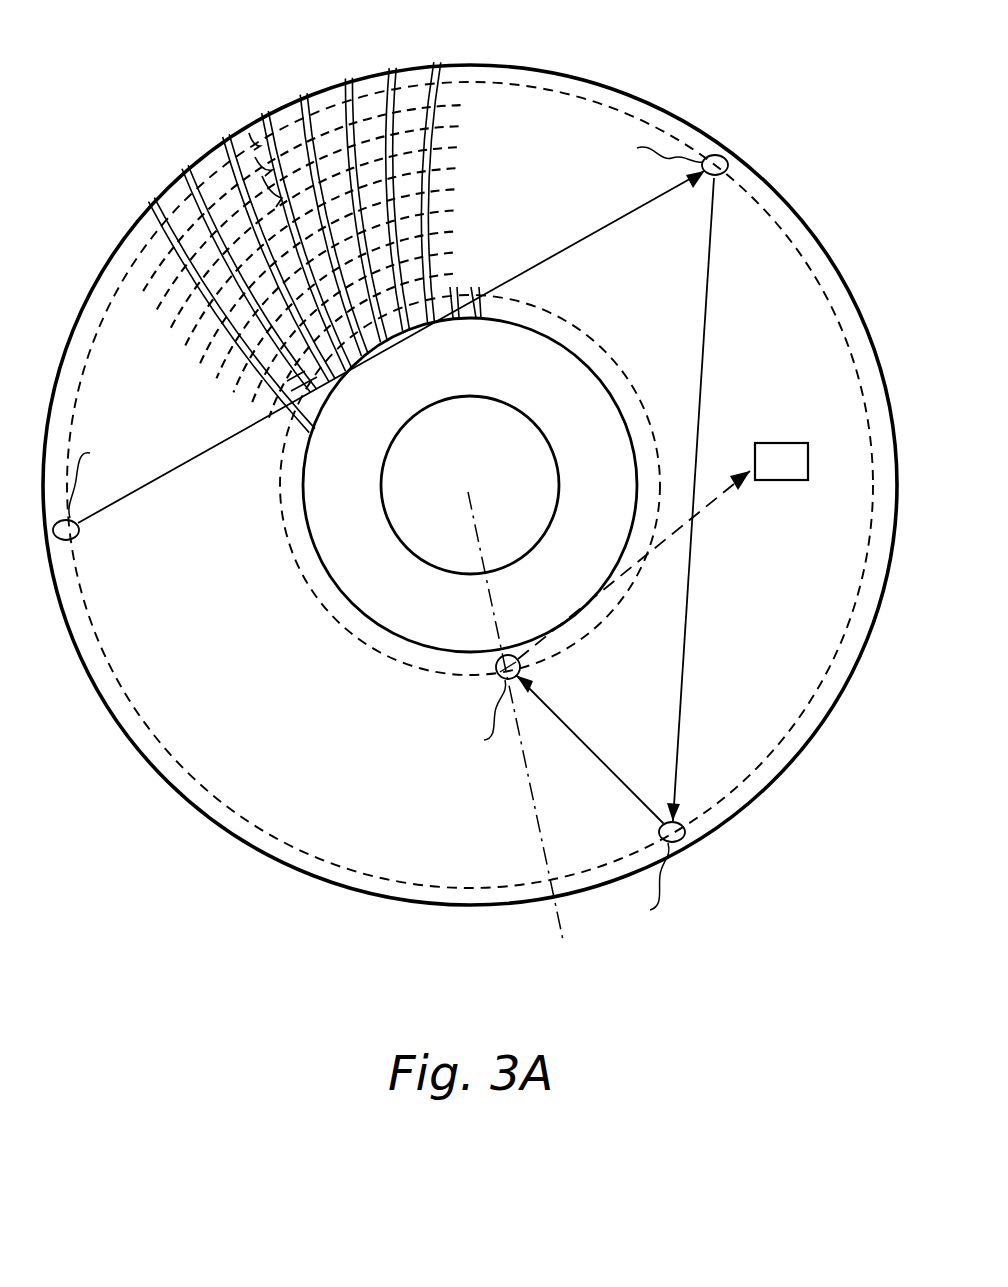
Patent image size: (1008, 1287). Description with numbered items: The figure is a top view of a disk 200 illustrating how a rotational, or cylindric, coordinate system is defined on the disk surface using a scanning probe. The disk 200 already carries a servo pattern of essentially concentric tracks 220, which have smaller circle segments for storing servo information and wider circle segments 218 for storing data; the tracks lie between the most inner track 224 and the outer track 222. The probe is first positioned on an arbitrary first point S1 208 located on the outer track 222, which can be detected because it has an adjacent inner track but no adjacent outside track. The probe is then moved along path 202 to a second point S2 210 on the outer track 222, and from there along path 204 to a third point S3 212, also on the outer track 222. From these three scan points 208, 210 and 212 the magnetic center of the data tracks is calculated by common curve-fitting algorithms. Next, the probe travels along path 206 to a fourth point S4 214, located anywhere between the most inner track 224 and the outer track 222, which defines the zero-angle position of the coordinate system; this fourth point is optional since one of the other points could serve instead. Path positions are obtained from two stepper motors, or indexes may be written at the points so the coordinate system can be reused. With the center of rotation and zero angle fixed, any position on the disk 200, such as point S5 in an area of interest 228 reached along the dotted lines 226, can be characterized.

The disk 200 is at (496, 822).
The path 202 is at (200, 456).
The path 204 is at (714, 316).
The path 206 is at (634, 792).
The first point S1 208 is at (80, 536).
The second point S2 210 is at (713, 153).
The third point S3 212 is at (680, 843).
The fourth point S4 214 is at (524, 668).
The wider circle segments 218 is at (354, 70).
The concentric tracks 220 is at (246, 132).
The outer track 222 is at (160, 748).
The most inner track 224 is at (315, 590).
The dotted lines 226 is at (722, 490).
The area of interest 228 is at (785, 443).